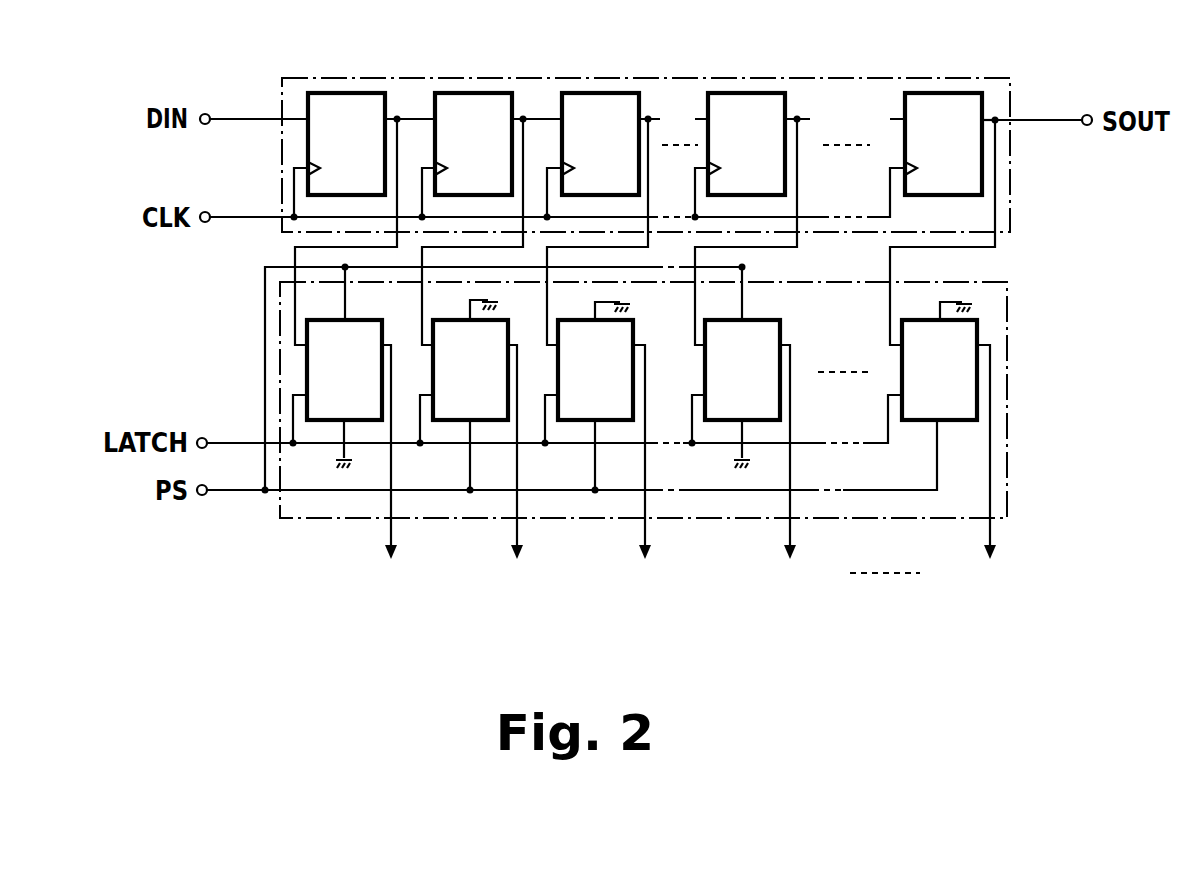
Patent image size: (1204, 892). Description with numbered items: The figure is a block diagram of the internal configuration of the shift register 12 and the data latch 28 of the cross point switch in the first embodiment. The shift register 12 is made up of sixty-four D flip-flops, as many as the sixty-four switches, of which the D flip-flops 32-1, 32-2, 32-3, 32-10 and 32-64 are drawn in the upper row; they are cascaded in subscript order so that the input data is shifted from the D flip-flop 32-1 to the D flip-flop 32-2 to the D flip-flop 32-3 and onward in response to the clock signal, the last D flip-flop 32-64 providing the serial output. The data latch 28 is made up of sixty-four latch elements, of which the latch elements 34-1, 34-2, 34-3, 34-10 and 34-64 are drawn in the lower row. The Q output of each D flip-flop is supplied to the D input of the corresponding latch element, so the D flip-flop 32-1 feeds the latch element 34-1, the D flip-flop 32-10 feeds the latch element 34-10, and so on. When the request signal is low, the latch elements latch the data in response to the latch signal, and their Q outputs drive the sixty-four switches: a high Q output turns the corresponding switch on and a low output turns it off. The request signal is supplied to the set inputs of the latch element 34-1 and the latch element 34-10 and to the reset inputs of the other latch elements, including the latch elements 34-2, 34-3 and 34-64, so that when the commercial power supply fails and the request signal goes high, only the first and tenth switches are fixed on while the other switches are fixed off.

The shift register 12 is at (840, 78).
The data latch 28 is at (1008, 310).
The D flip-flop 32-1 is at (343, 92).
The D flip-flop 32-2 is at (468, 92).
The D flip-flop 32-3 is at (597, 92).
The D flip-flop 32-10 is at (743, 92).
The D flip-flop 32-64 is at (940, 92).
The latch element 34-1 is at (352, 431).
The latch element 34-2 is at (517, 342).
The latch element 34-3 is at (645, 342).
The latch element 34-10 is at (790, 342).
The latch element 34-64 is at (980, 336).